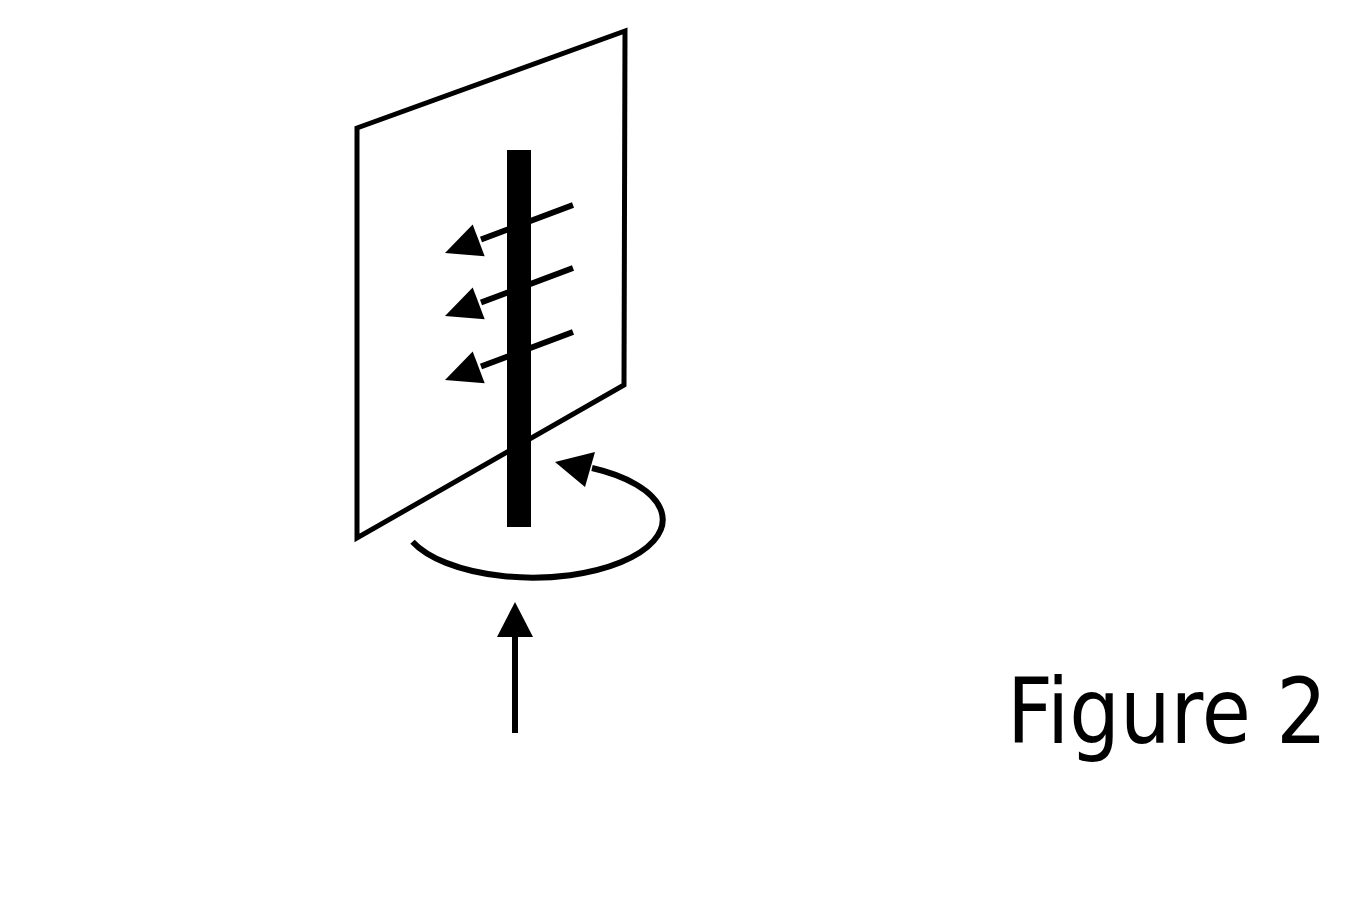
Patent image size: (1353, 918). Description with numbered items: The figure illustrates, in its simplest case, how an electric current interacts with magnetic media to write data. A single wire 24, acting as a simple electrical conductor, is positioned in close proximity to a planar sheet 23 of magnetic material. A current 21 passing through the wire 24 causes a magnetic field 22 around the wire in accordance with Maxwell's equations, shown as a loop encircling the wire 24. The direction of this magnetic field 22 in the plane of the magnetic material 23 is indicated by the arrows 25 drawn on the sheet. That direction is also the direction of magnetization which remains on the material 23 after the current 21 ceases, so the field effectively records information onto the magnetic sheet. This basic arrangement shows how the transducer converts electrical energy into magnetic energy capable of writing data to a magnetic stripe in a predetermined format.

The current 21 is at (498, 697).
The magnetic field 22 is at (683, 502).
The planar sheet of magnetic material 23 is at (587, 86).
The wire 24 is at (505, 192).
The arrows 25 is at (542, 254).